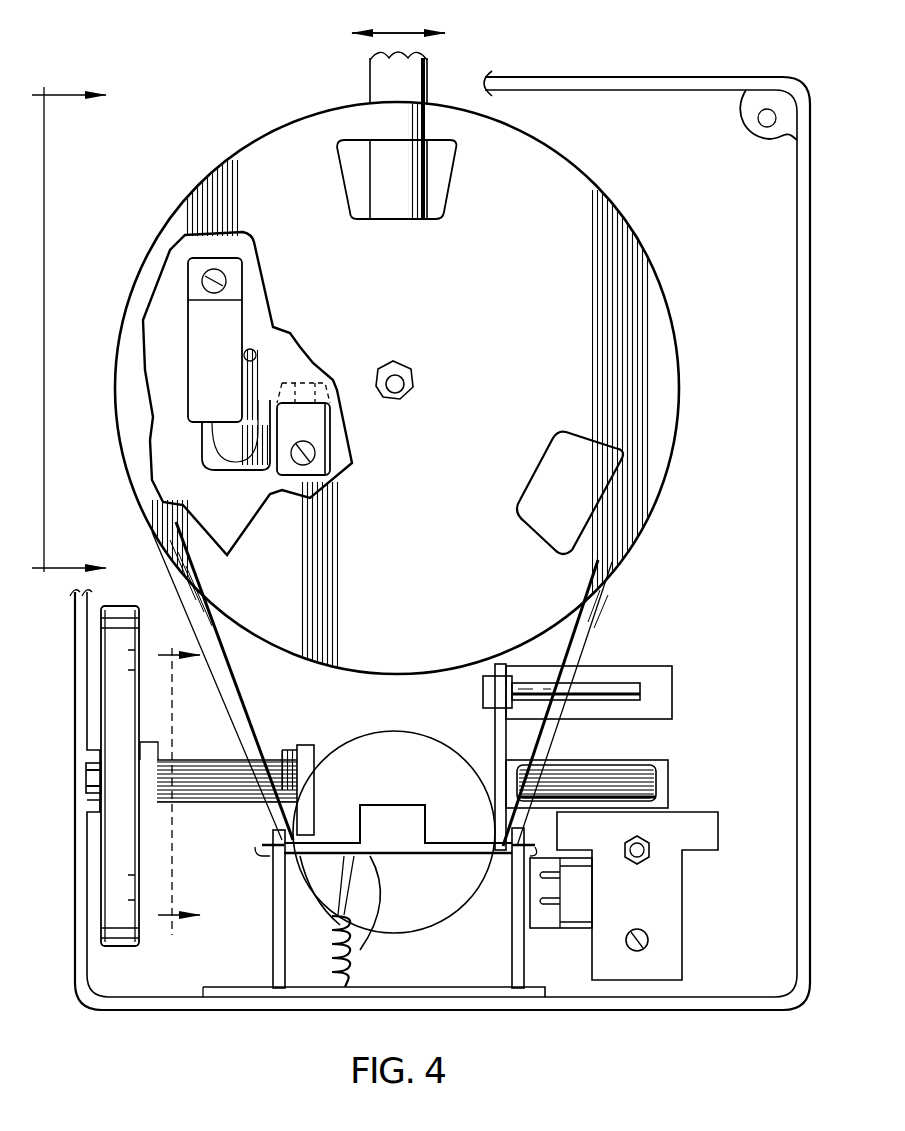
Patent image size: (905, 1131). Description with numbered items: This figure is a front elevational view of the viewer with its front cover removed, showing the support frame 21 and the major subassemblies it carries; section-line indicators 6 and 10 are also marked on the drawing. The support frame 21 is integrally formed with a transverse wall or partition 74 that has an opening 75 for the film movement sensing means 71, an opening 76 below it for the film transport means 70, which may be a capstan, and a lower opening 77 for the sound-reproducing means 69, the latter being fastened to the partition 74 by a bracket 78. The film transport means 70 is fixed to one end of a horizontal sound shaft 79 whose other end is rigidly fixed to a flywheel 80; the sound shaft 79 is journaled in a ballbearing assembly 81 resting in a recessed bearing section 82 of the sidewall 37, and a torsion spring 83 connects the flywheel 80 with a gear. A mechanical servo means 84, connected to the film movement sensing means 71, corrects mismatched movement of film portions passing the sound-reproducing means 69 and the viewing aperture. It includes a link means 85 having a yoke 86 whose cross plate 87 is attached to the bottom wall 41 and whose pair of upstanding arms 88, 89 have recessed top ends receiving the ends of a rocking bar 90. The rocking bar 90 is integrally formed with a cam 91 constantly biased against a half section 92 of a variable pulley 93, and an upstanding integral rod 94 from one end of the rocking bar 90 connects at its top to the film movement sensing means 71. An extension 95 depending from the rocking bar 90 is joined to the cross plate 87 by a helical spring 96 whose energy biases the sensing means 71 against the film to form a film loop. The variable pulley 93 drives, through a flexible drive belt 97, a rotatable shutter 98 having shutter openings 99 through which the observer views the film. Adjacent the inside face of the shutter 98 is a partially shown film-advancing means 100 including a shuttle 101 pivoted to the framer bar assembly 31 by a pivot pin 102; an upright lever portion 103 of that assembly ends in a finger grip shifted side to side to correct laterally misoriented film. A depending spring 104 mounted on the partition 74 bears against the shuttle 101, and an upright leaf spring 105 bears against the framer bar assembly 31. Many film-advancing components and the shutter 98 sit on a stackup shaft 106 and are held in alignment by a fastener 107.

The support frame 21 is at (698, 68).
The transverse wall or partition 74 is at (782, 210).
The bottom wall 41 is at (720, 1010).
The section line 10 is at (138, 112).
The section line 6 is at (182, 641).
The rotatable shutter 98 is at (660, 395).
The upright lever portion 103 is at (405, 149).
The shutter openings 99 is at (440, 168).
The stackup shaft 106 is at (396, 380).
The fastener 107 is at (405, 405).
The film-advancing means 100 is at (180, 328).
The depending spring 104 is at (200, 402).
The upright leaf spring 105 is at (320, 466).
The shuttle 101 is at (280, 350).
The pivot pin 102 is at (258, 358).
The framer bar assembly 31 is at (207, 466).
The flexible drive belt 97 is at (615, 593).
The sidewall 37 is at (75, 649).
The flywheel 80 is at (118, 706).
The ballbearing assembly 81 is at (84, 769).
The recessed bearing section 82 is at (82, 801).
The torsion spring 83 is at (270, 801).
The half section 92 is at (405, 745).
The variable pulley 93 is at (373, 725).
The sound shaft 79 is at (490, 776).
The rocking bar 90 is at (450, 851).
The cam 91 is at (394, 821).
The upstanding integral rod 94 is at (510, 813).
The upstanding arm 89 is at (273, 929).
The upstanding arm 88 is at (522, 969).
The yoke 86 is at (272, 987).
The cross plate 87 is at (412, 991).
The extension 95 is at (340, 894).
The link means 85 is at (360, 916).
The helical spring 96 is at (332, 966).
The mechanical servo means 84 is at (470, 906).
The opening 75 is at (648, 669).
The film movement sensing means 71 is at (640, 694).
The opening 76 is at (660, 773).
The film transport means 70 is at (652, 795).
The sound-reproducing means 69 is at (582, 903).
The bracket 78 is at (670, 964).
The lower opening 77 is at (556, 923).